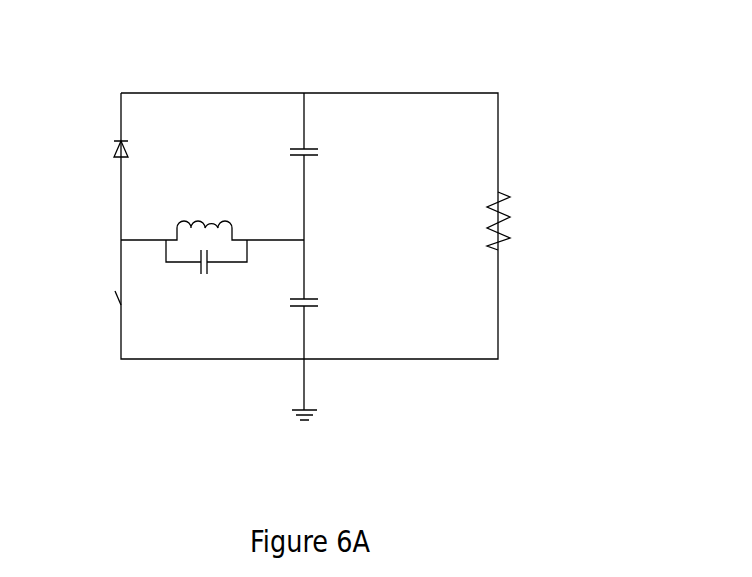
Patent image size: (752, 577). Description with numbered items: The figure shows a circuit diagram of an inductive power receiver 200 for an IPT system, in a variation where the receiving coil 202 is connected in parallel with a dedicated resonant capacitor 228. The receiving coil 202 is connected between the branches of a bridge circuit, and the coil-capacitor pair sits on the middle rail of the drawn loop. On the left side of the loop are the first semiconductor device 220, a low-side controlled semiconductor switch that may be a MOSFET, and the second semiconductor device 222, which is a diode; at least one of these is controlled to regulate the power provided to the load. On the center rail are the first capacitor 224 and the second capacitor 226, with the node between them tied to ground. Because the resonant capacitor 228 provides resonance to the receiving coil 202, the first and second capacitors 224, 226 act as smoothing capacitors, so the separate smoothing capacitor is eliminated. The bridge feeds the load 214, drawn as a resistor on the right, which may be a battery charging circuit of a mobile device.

The inductive power receiver 200 is at (545, 86).
The receiving coil 202 is at (203, 213).
The load 214 is at (508, 215).
The first semiconductor device 220 is at (116, 304).
The second semiconductor device 222 is at (113, 145).
The first capacitor 224 is at (308, 307).
The second capacitor 226 is at (292, 147).
The resonant capacitor 228 is at (206, 252).